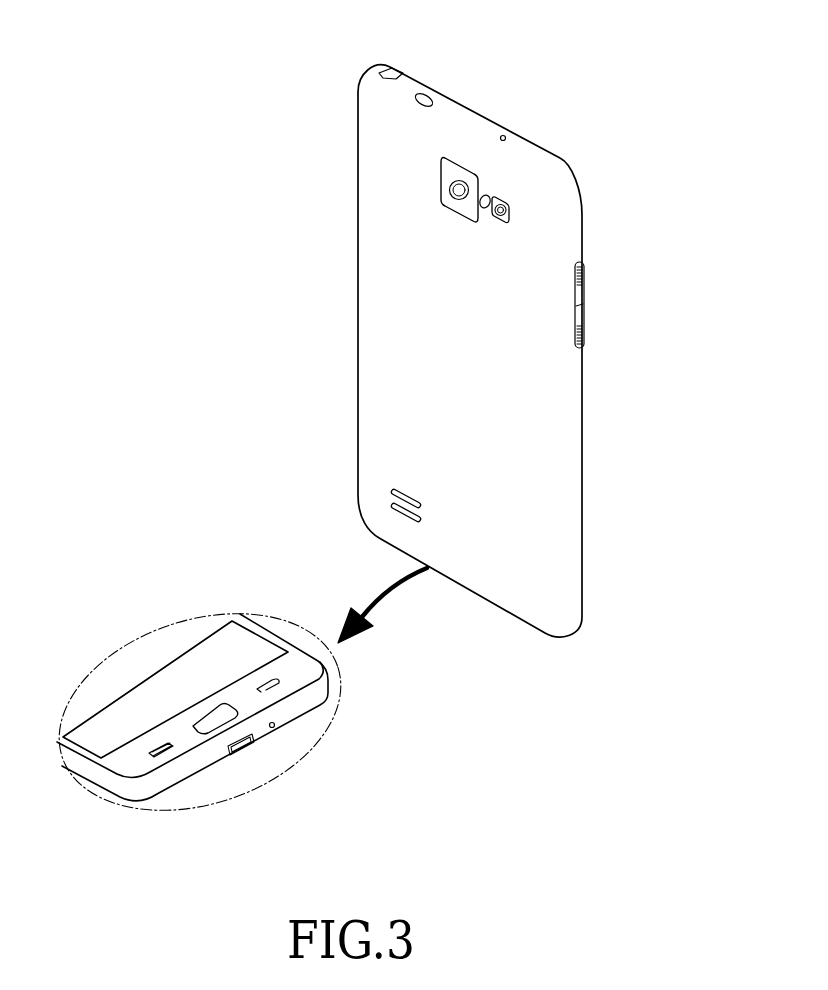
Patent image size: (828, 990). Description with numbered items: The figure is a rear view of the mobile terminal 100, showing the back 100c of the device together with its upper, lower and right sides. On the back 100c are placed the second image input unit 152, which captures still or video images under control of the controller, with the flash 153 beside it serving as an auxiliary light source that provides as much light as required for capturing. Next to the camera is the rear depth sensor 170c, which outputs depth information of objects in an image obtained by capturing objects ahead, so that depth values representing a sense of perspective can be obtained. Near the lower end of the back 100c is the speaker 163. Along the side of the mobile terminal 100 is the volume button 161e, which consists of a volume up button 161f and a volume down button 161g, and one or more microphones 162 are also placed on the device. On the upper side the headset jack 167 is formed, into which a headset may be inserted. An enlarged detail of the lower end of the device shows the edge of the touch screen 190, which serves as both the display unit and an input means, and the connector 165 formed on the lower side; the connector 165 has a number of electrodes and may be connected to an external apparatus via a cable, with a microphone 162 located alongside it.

The mobile terminal 100 is at (360, 43).
The back 100c is at (380, 337).
The headset jack 167 is at (427, 94).
The microphone 162 is at (505, 136).
The second image input unit 152 is at (440, 185).
The depth sensor 170c is at (488, 196).
The flash 153 is at (511, 215).
The volume button 161e is at (597, 261).
The volume up button 161f is at (583, 290).
The volume down button 161g is at (583, 317).
The speaker 163 is at (392, 490).
The touch screen 190 is at (128, 673).
The connector 165 is at (240, 750).